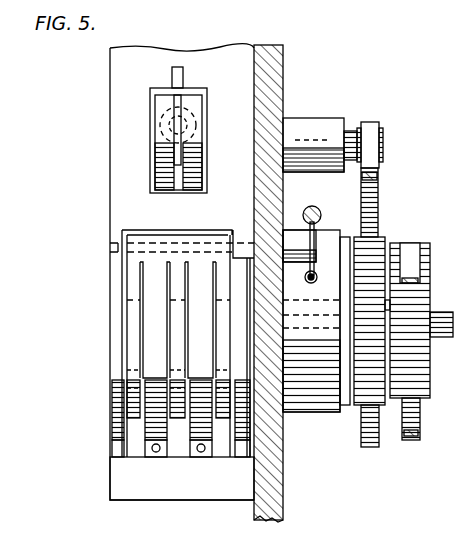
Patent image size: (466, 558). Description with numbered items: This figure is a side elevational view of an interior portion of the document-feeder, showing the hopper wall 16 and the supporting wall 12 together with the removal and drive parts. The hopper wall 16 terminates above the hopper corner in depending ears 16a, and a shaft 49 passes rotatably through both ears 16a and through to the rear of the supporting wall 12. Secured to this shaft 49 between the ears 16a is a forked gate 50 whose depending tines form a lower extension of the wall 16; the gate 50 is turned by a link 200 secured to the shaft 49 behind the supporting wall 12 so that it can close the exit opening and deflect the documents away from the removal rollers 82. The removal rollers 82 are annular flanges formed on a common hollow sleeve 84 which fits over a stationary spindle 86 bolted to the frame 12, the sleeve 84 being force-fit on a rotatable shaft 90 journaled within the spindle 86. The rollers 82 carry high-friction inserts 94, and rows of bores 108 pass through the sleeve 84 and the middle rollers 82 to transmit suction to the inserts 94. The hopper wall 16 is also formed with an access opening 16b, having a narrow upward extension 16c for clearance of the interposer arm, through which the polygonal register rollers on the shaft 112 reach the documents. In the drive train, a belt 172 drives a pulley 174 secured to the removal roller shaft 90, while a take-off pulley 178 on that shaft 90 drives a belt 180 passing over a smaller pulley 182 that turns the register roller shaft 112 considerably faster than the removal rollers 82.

The supporting wall 12 is at (283, 110).
The hopper wall 16 is at (110, 197).
The ears 16a is at (122, 262).
The access opening 16b is at (155, 128).
The upward extension 16c is at (183, 80).
The shaft 49 is at (292, 240).
The forked gate 50 is at (130, 282).
The removal rollers 82 is at (150, 340).
The sleeve 84 is at (130, 412).
The spindle 86 is at (302, 412).
The removal roller shaft 90 is at (444, 313).
The friction inserts 94 is at (120, 456).
The bores 108 is at (158, 458).
The register roller shaft 112 is at (334, 118).
The belt 172 is at (411, 442).
The pulley 174 is at (428, 394).
The take-off pulley 178 is at (380, 246).
The belt 180 is at (378, 198).
The register roller drive pulley 182 is at (383, 138).
The link 200 is at (316, 228).